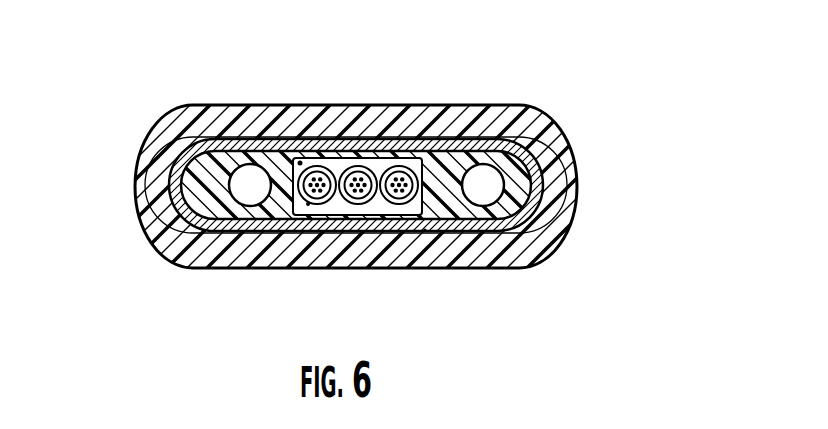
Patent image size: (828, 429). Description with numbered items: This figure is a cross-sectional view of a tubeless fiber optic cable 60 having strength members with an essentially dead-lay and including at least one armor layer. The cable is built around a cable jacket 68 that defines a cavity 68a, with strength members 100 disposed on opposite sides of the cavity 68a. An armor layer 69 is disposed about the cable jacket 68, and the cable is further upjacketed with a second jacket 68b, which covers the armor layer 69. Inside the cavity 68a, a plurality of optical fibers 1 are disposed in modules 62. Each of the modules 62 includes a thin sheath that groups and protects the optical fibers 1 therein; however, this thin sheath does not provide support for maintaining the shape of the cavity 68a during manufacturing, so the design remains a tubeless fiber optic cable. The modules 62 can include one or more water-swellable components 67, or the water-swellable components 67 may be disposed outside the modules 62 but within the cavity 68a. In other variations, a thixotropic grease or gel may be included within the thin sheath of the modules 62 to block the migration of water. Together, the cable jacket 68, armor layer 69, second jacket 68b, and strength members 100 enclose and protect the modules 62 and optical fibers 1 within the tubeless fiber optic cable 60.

The tubeless fiber optic cable 60 is at (118, 115).
The modules 62 is at (317, 167).
The water-swellable components 67 is at (300, 163).
The cable jacket 68 is at (172, 222).
The cavity 68a is at (417, 214).
The second jacket 68b is at (147, 192).
The armor layer 69 is at (533, 148).
The strength members 100 is at (198, 207).
The optical fibers 1 is at (392, 200).